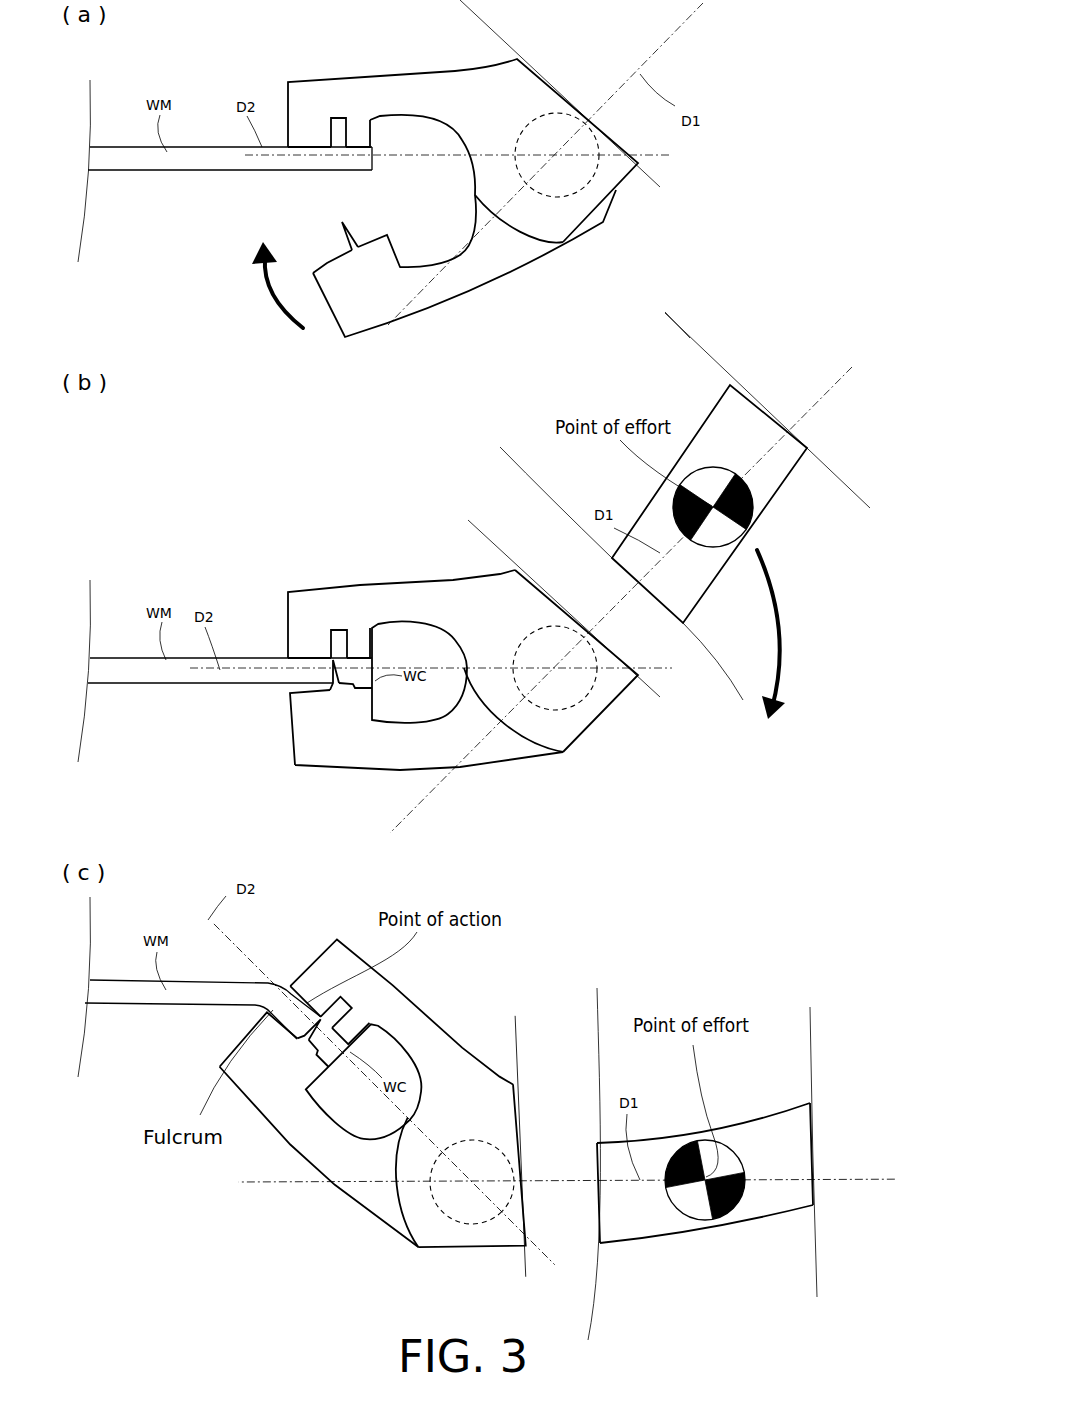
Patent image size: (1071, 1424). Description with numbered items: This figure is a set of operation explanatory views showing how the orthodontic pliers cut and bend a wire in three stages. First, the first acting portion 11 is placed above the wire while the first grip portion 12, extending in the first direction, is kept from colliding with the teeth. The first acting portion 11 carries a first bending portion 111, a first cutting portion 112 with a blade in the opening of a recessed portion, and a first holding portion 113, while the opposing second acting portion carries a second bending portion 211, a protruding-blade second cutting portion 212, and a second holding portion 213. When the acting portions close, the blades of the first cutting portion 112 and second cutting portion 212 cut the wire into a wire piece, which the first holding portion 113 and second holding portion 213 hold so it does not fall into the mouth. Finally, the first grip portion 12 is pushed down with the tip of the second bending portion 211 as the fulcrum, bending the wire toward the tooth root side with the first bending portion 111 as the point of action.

The first acting portion 11 is at (402, 103).
The first grip portion 12 is at (369, 311).
The first bending portion 111 is at (308, 150).
The first cutting portion 112 is at (345, 127).
The first holding portion 113 is at (358, 153).
The second bending portion 211 is at (318, 265).
The second cutting portion 212 is at (343, 222).
The second holding portion 213 is at (372, 237).